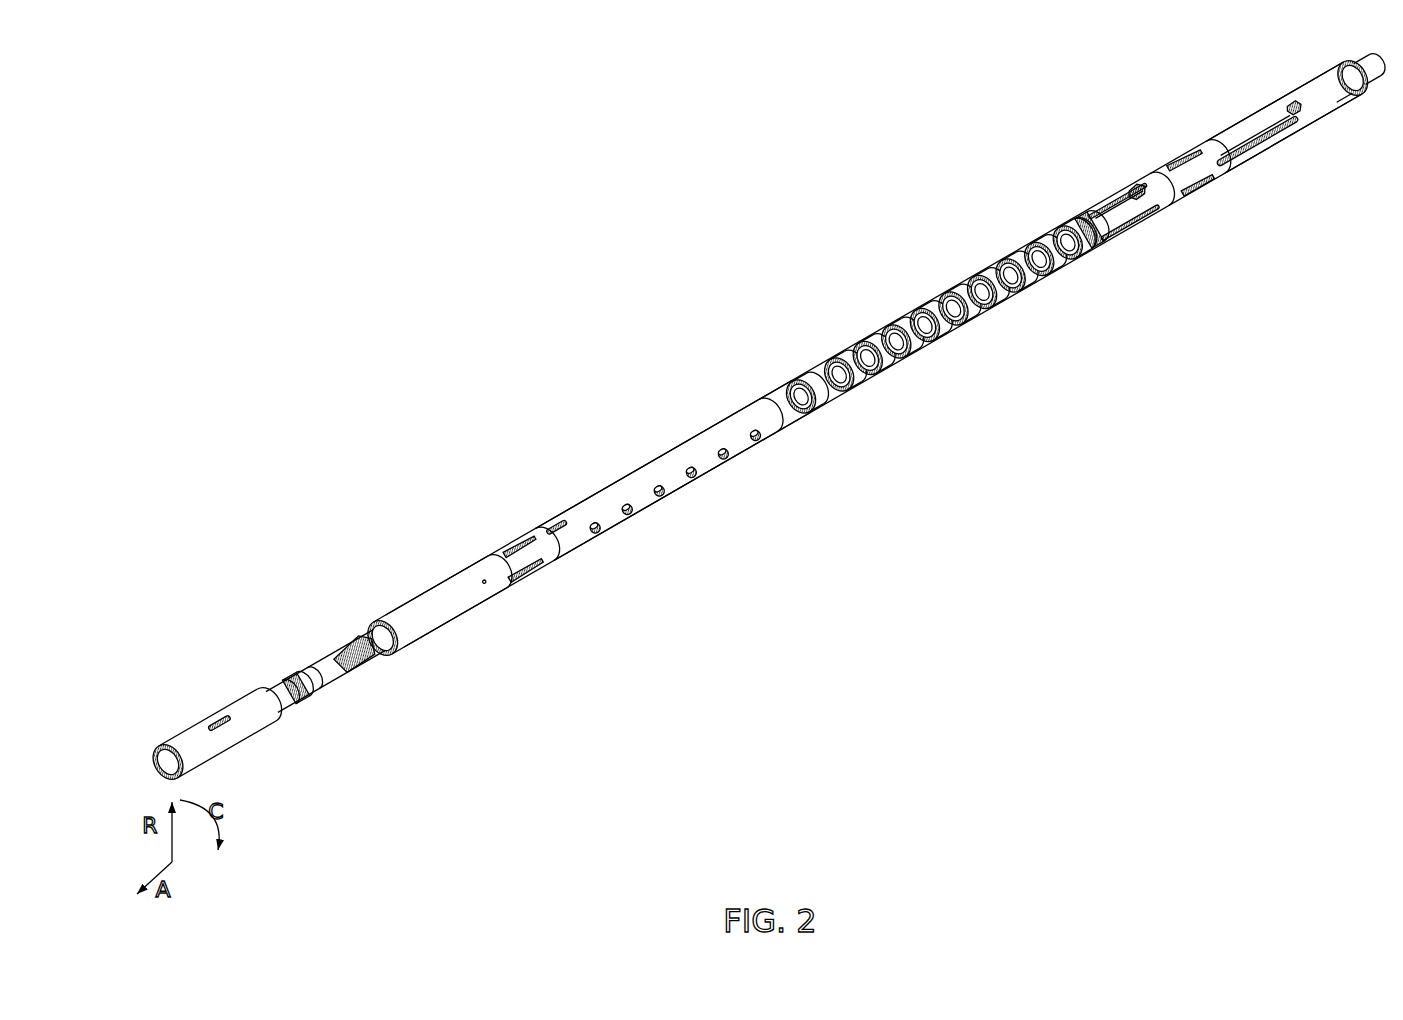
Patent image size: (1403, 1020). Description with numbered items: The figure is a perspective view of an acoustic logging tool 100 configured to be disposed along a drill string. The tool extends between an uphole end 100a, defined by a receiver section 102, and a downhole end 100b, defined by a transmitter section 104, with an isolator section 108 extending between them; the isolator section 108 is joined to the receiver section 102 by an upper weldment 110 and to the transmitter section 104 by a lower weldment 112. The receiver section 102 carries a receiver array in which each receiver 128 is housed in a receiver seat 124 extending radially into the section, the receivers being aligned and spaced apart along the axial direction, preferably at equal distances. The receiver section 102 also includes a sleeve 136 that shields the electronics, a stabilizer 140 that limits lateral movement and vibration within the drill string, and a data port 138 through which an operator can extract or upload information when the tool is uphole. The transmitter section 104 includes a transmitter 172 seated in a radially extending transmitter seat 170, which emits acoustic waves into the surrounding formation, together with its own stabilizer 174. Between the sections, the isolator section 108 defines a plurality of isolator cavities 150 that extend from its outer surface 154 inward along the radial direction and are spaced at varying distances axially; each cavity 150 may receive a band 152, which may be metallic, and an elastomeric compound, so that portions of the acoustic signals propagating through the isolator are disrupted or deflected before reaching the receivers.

The acoustic logging tool 100 is at (537, 222).
The uphole end 100a is at (423, 583).
The downhole end 100b is at (1325, 65).
The receiver section 102 is at (660, 448).
The transmitter section 104 is at (1185, 169).
The isolator section 108 is at (933, 328).
The upper weldment 110 is at (790, 440).
The lower weldment 112 is at (1088, 262).
The receiver seat 124 is at (676, 500).
The receiver 128 is at (668, 508).
The sleeve 136 is at (468, 621).
The data port 138 is at (1304, 112).
The stabilizer 140 is at (540, 590).
The isolator cavity 150 is at (807, 392).
The band 152 is at (845, 370).
The outer surface 154 is at (873, 354).
The transmitter seat 170 is at (1127, 178).
The transmitter 172 is at (1107, 185).
The stabilizer 174 is at (1197, 184).